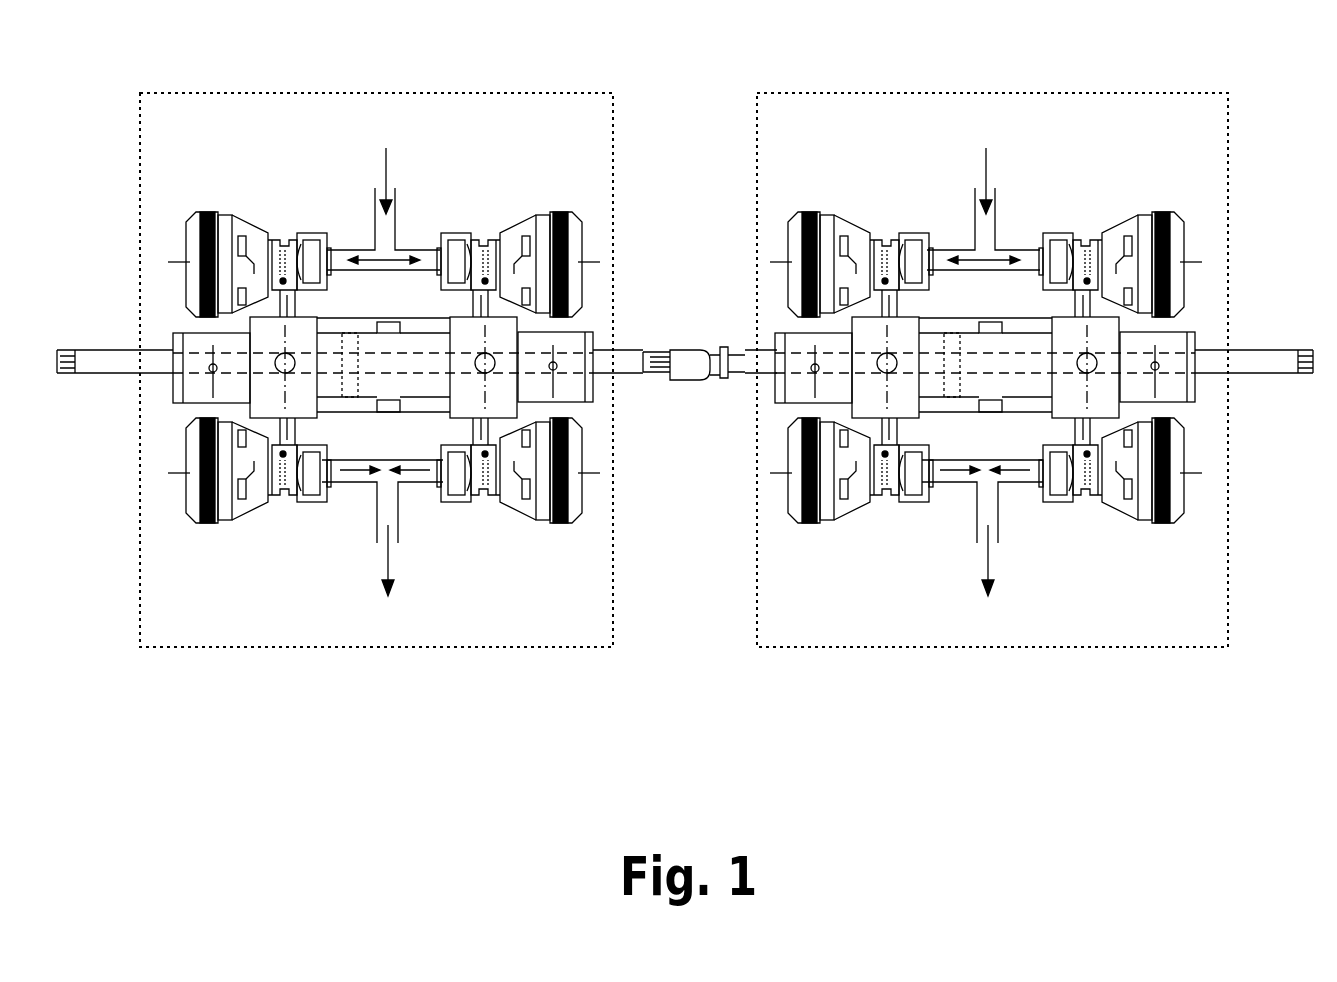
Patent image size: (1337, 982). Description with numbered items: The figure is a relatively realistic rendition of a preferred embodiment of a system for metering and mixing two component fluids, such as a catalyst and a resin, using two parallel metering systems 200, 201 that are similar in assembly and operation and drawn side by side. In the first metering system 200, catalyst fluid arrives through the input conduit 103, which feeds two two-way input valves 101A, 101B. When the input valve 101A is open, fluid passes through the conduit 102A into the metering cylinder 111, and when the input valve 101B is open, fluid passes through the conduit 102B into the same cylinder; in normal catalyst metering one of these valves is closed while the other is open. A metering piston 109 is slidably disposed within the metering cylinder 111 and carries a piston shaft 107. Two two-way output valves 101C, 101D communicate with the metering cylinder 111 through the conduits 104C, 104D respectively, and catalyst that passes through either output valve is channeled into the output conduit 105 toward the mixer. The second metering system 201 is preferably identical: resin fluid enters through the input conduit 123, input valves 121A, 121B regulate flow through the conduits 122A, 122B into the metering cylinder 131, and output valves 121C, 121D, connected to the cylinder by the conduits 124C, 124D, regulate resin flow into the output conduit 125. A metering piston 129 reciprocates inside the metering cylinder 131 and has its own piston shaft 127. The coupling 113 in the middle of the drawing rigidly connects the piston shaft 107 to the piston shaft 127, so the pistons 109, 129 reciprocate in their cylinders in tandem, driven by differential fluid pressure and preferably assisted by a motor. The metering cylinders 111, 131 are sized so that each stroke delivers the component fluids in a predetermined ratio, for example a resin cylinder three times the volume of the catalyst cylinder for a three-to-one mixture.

The metering system 200 is at (512, 90).
The metering system 201 is at (828, 90).
The input valve 101A is at (207, 210).
The input valve 101B is at (560, 210).
The output valve 101C is at (205, 527).
The output valve 101D is at (555, 530).
The conduit 102A is at (302, 232).
The conduit 102B is at (460, 237).
The conduit 104C is at (305, 500).
The conduit 104D is at (462, 498).
The input conduit 103 is at (397, 217).
The output conduit 105 is at (400, 505).
The piston shaft 107 is at (213, 368).
The metering piston 109 is at (352, 405).
The metering cylinder 111 is at (577, 330).
The coupling 113 is at (687, 350).
The input valve 121A is at (812, 210).
The input valve 121B is at (1160, 210).
The output valve 121C is at (813, 525).
The output valve 121D is at (1160, 525).
The conduit 122A is at (922, 228).
The conduit 122B is at (1058, 228).
The conduit 124C is at (897, 503).
The conduit 124D is at (1067, 500).
The input conduit 123 is at (993, 223).
The output conduit 125 is at (995, 500).
The piston shaft 127 is at (815, 368).
The metering piston 129 is at (950, 405).
The metering cylinder 131 is at (1195, 330).